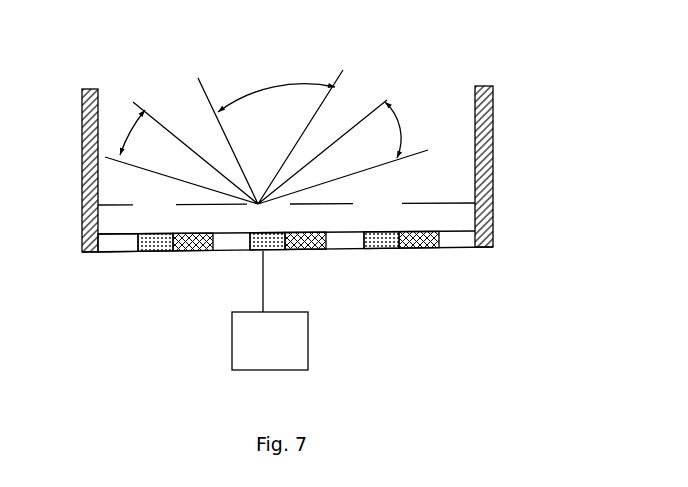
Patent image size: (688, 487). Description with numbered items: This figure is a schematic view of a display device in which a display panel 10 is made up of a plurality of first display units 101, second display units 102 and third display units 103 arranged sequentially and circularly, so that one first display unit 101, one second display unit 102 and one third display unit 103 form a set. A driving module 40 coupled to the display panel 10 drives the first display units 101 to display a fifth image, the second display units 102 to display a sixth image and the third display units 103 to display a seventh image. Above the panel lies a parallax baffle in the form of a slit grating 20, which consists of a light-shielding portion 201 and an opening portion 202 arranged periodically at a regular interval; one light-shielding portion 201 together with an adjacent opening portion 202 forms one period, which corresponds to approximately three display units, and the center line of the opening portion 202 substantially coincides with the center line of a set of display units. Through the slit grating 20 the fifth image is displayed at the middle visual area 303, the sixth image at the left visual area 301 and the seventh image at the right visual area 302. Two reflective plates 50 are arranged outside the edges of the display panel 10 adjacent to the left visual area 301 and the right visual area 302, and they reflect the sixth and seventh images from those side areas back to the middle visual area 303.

The display panel 10 is at (287, 269).
The first display unit 101 is at (120, 243).
The second display unit 102 is at (155, 243).
The third display unit 103 is at (193, 258).
The slit grating 20 is at (286, 259).
The light-shielding portion 201 is at (343, 205).
The opening portion 202 is at (373, 205).
The left visual area 301 is at (123, 112).
The right visual area 302 is at (410, 142).
The middle visual area 303 is at (238, 93).
The driving module 40 is at (270, 310).
The reflective plate 50 is at (90, 185).